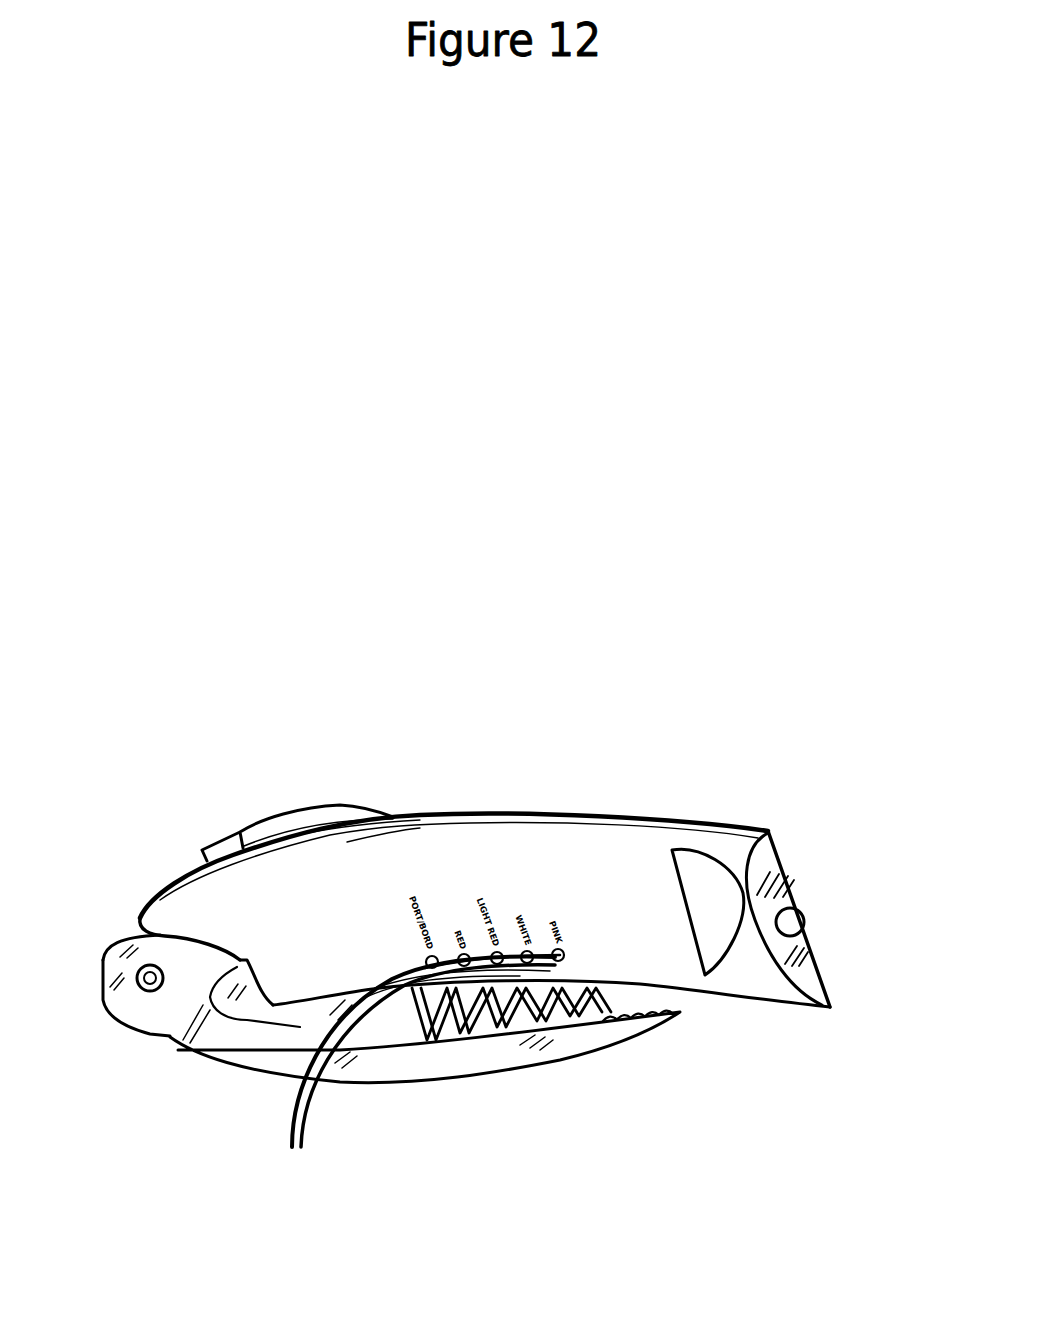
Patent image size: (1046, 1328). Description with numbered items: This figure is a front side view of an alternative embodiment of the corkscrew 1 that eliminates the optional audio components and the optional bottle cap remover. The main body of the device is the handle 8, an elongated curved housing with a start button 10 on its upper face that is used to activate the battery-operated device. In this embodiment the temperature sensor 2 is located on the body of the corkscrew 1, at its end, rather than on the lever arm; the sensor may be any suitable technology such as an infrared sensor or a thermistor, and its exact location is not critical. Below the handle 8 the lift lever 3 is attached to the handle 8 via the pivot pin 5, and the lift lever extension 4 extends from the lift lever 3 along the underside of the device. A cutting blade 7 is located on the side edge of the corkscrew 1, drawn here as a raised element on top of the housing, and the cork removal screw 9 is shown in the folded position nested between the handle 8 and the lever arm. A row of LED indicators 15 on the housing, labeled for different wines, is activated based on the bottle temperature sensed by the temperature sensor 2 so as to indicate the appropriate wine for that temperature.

The corkscrew 1 is at (288, 628).
The temperature sensor 2 is at (797, 921).
The lift lever 3 is at (170, 1036).
The lift lever extension 4 is at (502, 1060).
The pivot pin 5 is at (143, 981).
The cutting blade 7 is at (297, 822).
The handle 8 is at (507, 850).
The cork removal screw 9 is at (452, 1020).
The start button 10 is at (686, 857).
The LED indicators 15 is at (412, 1079).